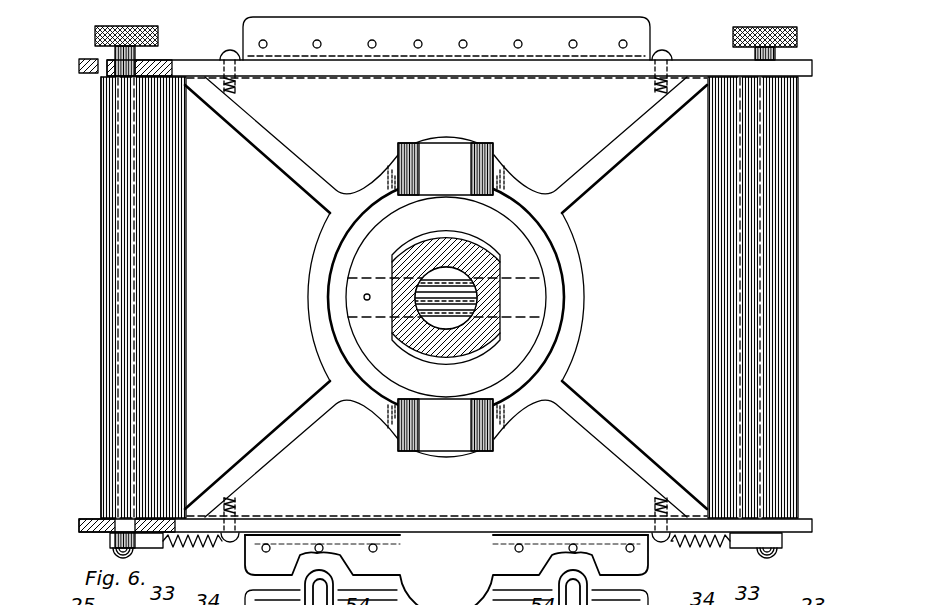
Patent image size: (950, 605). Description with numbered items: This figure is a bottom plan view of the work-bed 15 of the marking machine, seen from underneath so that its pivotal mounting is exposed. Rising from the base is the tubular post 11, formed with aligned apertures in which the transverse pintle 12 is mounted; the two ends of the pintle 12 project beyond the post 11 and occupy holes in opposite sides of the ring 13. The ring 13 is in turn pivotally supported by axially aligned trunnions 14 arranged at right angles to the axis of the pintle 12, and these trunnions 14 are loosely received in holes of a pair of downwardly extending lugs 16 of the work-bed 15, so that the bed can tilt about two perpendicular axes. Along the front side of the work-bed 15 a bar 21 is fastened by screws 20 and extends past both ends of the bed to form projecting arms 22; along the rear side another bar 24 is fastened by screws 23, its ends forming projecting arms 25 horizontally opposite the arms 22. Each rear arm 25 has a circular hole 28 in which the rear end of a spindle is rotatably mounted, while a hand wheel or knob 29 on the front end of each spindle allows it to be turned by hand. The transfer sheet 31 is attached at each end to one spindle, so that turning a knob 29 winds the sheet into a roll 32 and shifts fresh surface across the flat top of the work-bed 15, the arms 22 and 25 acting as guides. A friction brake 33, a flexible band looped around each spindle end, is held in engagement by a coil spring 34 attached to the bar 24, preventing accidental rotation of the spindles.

The tubular post 11 is at (468, 333).
The pintle 12 is at (447, 291).
The ring 13 is at (446, 297).
The trunnions 14 is at (445, 141).
The work-bed 15 is at (446, 297).
The lugs 16 is at (405, 145).
The screws 20 is at (232, 50).
The bar 21 is at (563, 68).
The projecting arms 22 is at (82, 76).
The screws 23 is at (237, 503).
The bar 24 is at (571, 524).
The projecting arms 25 is at (110, 536).
The circular hole 28 is at (90, 519).
The hand wheel or knob 29 is at (95, 37).
The transfer sheet 31 is at (178, 248).
The roll 32 is at (101, 161).
The friction brake 33 is at (112, 542).
The coil spring 34 is at (205, 548).